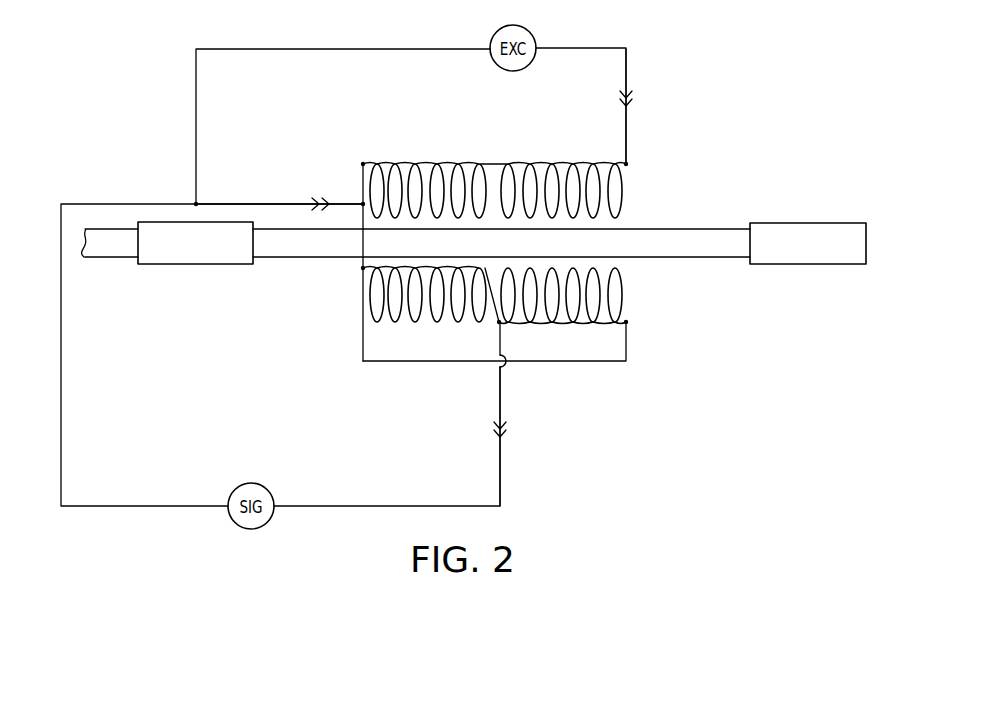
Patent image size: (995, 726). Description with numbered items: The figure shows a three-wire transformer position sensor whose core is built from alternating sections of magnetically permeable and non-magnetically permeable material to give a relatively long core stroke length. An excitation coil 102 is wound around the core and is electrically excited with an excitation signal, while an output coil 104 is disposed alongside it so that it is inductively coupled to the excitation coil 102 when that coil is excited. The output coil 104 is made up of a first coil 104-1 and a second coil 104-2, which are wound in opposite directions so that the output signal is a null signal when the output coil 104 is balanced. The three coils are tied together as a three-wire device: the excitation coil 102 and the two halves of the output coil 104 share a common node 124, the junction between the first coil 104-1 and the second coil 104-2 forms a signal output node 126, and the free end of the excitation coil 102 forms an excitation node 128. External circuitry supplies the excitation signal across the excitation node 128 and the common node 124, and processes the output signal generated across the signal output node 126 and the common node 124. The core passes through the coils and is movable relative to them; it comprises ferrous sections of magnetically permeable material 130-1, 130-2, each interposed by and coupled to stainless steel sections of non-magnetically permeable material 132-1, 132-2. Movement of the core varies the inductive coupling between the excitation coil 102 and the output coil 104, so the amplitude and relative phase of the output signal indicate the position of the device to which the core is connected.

The excitation coil 102 is at (474, 148).
The output coil 104 is at (550, 314).
The first coil 104-1 is at (520, 323).
The second coil 104-2 is at (479, 323).
The common node 124 is at (340, 201).
The signal output node 126 is at (500, 385).
The excitation node 128 is at (626, 118).
The section of magnetically permeable material 130-1 is at (190, 264).
The section of magnetically permeable material 130-2 is at (806, 264).
The section of non-magnetically permeable material 132-1 is at (664, 229).
The section of non-magnetically permeable material 132-2 is at (110, 258).